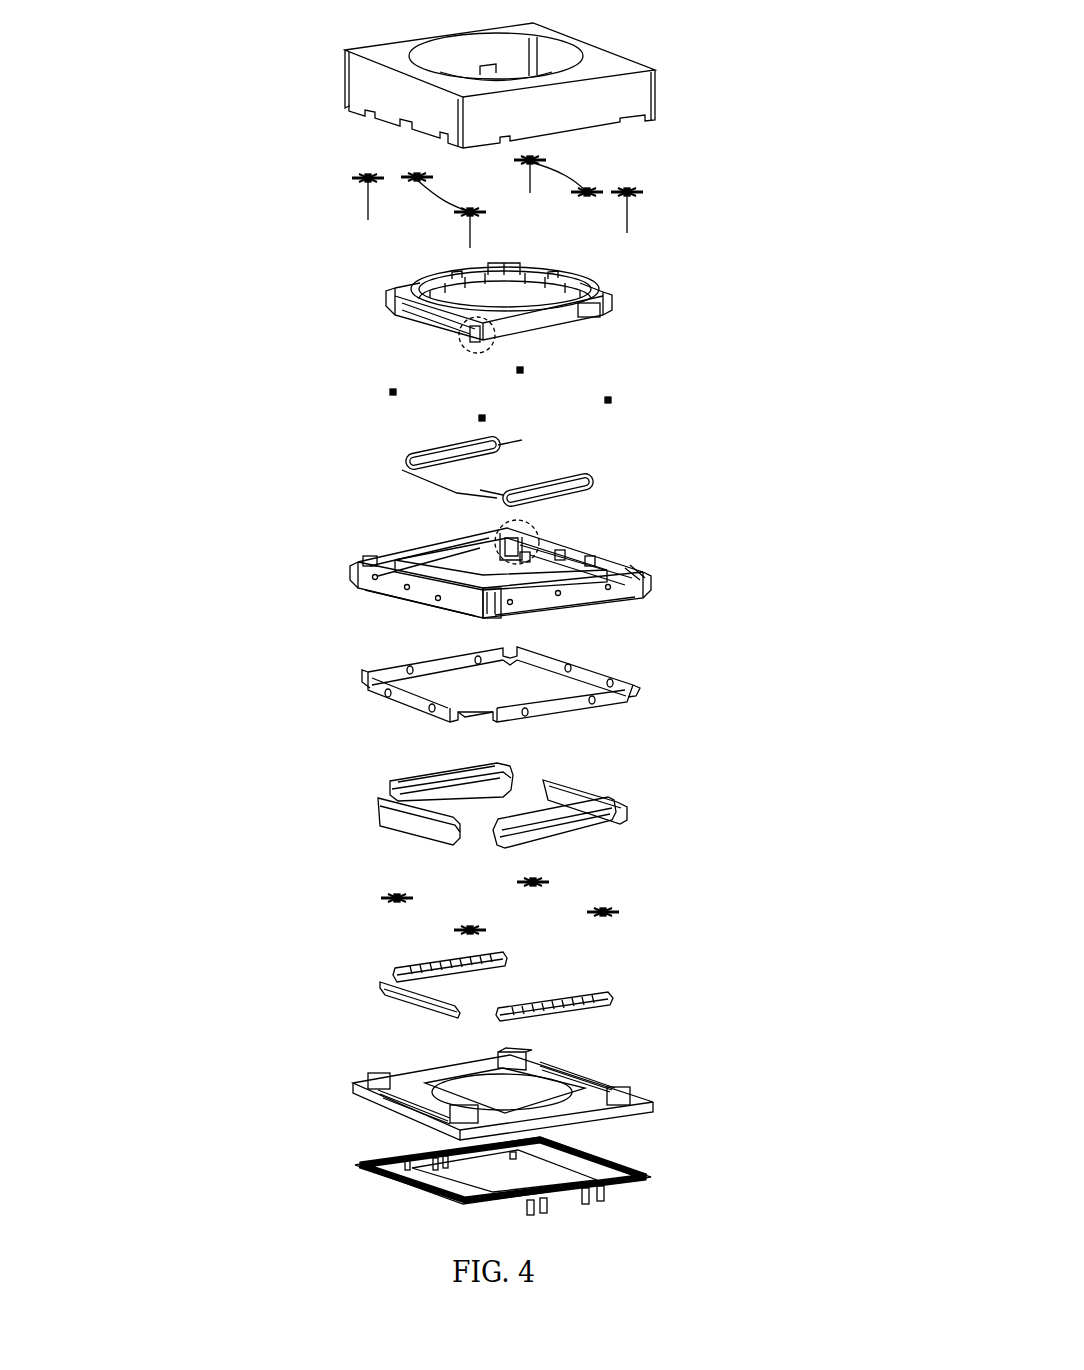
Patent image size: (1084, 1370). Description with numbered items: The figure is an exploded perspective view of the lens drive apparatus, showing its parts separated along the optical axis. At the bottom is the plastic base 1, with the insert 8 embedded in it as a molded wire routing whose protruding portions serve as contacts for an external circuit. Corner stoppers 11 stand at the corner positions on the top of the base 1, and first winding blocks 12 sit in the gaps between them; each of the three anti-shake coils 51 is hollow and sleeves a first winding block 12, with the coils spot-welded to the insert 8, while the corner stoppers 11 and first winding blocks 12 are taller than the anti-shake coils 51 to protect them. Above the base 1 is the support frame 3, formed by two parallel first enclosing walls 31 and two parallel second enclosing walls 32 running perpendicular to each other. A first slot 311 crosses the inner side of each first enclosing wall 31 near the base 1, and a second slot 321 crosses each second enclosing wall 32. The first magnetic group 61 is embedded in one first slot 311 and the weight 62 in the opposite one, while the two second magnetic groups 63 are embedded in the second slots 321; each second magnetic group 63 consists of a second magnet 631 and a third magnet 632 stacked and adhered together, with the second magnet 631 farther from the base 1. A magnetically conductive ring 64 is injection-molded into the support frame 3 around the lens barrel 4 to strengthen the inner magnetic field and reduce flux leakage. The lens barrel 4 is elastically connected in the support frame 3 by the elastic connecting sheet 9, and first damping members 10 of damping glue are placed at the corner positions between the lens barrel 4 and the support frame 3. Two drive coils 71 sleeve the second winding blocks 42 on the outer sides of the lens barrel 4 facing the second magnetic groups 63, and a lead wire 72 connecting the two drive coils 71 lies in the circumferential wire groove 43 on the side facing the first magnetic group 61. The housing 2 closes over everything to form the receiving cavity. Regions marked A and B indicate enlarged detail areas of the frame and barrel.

The base 1 is at (504, 1092).
The corner stopper 11 is at (638, 1082).
The first winding block 12 is at (368, 1102).
The housing 2 is at (612, 58).
The support frame 3 is at (502, 571).
The first enclosing wall 31 is at (423, 598).
The first slot 311 is at (645, 584).
The second enclosing wall 32 is at (423, 535).
The second slot 321 is at (422, 558).
The lens barrel 4 is at (502, 312).
The second winding block 42 is at (600, 316).
The wire groove 43 is at (430, 323).
The anti-shake coil 51 is at (397, 998).
The first magnetic group 61 is at (415, 828).
The weight 62 is at (590, 790).
The second magnetic group 63 is at (498, 798).
The second magnet 631 is at (423, 777).
The third magnet 632 is at (422, 800).
The magnetically conductive ring 64 is at (607, 697).
The drive coil 71 is at (410, 458).
The lead wire 72 is at (405, 480).
The insert 8 is at (617, 1193).
The elastic connecting sheet 9 is at (365, 178).
The first damping member 10 is at (612, 400).
The detail region A is at (543, 525).
The detail region B is at (470, 338).